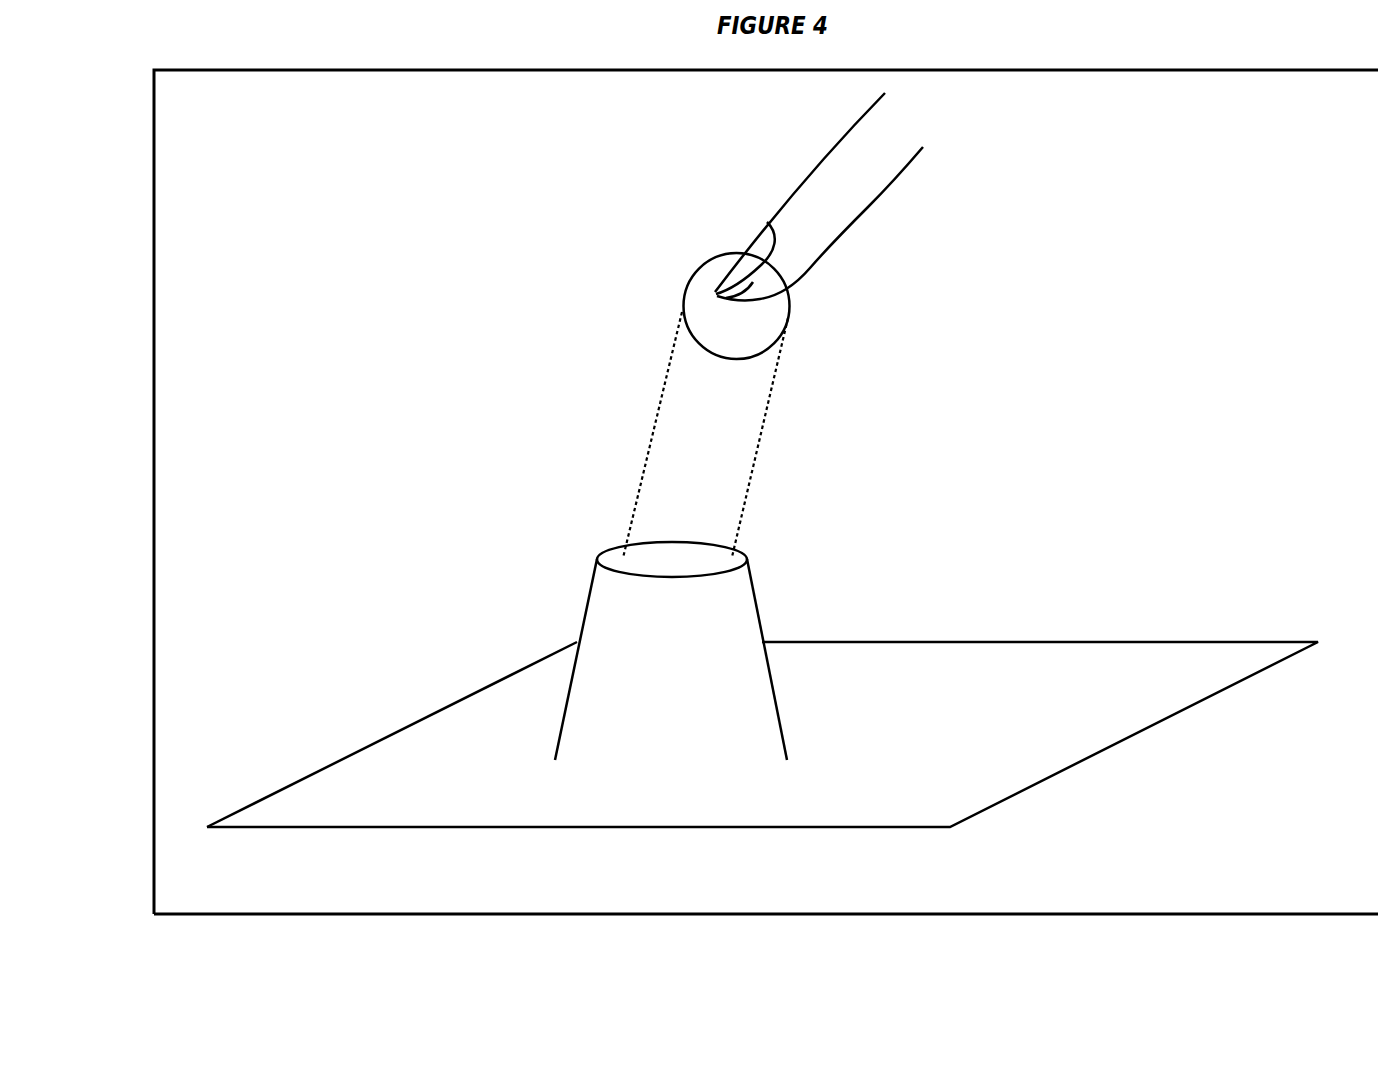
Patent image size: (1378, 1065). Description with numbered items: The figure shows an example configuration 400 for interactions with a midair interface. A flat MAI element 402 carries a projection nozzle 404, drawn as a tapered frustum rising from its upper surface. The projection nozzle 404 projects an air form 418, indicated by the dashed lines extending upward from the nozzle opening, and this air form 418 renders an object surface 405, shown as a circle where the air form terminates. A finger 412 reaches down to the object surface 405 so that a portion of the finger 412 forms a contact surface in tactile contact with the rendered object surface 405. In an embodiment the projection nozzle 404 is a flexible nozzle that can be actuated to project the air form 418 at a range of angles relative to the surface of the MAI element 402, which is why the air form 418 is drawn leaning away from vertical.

The system / environment 400 is at (203, 95).
The MAI element 402 is at (1145, 727).
The projection nozzle 404 is at (573, 680).
The object surface 405 is at (712, 350).
The finger 412 is at (717, 297).
The air form 418 is at (690, 433).